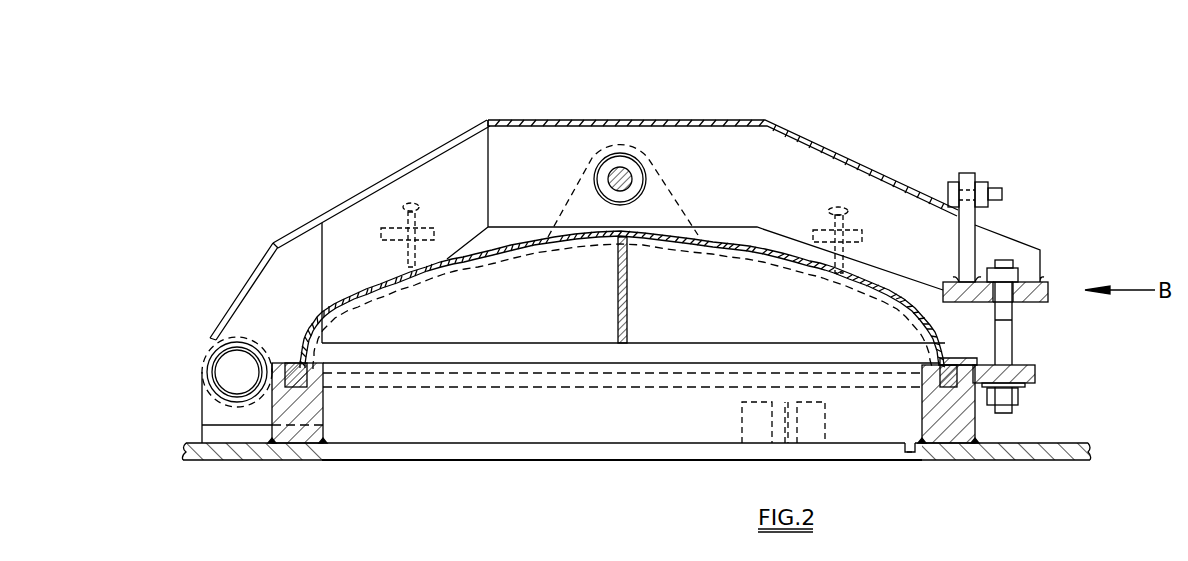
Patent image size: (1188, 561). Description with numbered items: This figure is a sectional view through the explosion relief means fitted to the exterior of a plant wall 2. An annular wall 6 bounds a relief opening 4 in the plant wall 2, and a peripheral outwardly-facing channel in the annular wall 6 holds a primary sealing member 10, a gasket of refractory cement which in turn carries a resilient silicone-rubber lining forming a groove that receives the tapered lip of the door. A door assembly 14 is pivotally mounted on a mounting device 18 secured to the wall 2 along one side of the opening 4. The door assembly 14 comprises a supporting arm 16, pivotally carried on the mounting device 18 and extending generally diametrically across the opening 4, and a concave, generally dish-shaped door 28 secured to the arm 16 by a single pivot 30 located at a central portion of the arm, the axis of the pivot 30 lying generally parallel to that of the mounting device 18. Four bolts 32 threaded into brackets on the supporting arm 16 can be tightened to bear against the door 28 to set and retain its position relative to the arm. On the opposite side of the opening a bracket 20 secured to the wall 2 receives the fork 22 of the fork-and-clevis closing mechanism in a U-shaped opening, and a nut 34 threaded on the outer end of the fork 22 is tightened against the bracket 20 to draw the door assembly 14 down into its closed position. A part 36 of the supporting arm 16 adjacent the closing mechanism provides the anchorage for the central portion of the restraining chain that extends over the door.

The plant wall 2 is at (1086, 460).
The relief opening 4 is at (905, 452).
The annular wall 6 is at (975, 424).
The primary sealing member 10 is at (312, 362).
The door assembly 14 is at (865, 153).
The supporting arm 16 is at (737, 121).
The mounting device 18 is at (228, 366).
The bracket 20 is at (1035, 374).
The fork 22 is at (1005, 343).
The door 28 is at (943, 323).
The pivot 30 is at (623, 170).
The bolts 32 is at (418, 203).
The nut 34 is at (1019, 396).
The part of the supporting arm 36 is at (982, 188).